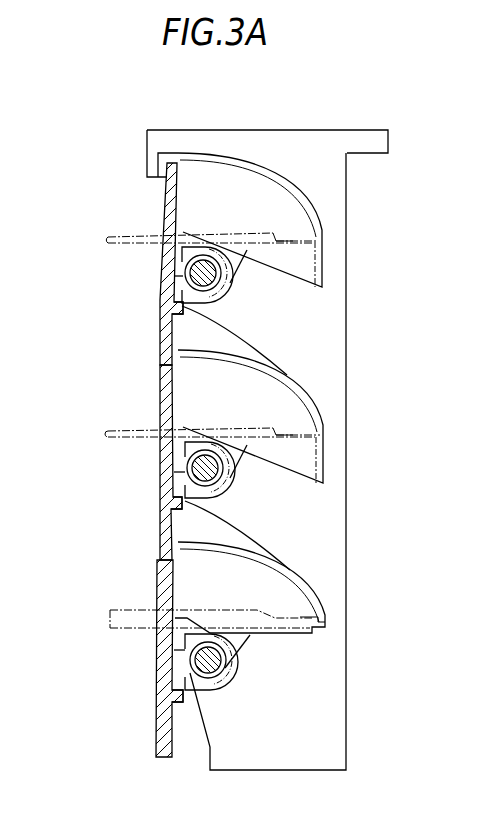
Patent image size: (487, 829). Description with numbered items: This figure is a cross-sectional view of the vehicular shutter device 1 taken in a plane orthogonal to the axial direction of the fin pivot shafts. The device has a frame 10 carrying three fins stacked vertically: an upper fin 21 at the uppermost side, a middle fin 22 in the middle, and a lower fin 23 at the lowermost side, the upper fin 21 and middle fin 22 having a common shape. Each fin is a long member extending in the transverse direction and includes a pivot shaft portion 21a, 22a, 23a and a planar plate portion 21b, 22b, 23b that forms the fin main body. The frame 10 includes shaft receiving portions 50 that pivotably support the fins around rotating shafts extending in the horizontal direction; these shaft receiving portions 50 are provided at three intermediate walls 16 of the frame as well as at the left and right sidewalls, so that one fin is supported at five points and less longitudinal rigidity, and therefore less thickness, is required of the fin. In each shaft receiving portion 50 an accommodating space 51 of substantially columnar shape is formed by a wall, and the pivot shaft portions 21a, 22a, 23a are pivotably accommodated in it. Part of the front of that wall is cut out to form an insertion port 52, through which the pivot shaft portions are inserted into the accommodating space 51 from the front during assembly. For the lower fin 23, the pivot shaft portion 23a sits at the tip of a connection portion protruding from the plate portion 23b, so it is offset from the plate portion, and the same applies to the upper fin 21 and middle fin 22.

The vehicular shutter device 1 is at (270, 111).
The frame 10 is at (172, 125).
The intermediate wall 16 is at (330, 176).
The upper fin 21 is at (166, 212).
The pivot shaft portion 21a is at (183, 278).
The plate portion 21b is at (175, 304).
The middle fin 22 is at (167, 403).
The pivot shaft portion 22a is at (185, 474).
The plate portion 22b is at (175, 498).
The lower fin 23 is at (167, 595).
The pivot shaft portion 23a is at (185, 648).
The plate portion 23b is at (185, 680).
The shaft receiving portion 50 is at (270, 277).
The accommodating space 51 is at (213, 272).
The insertion port 52 is at (182, 263).